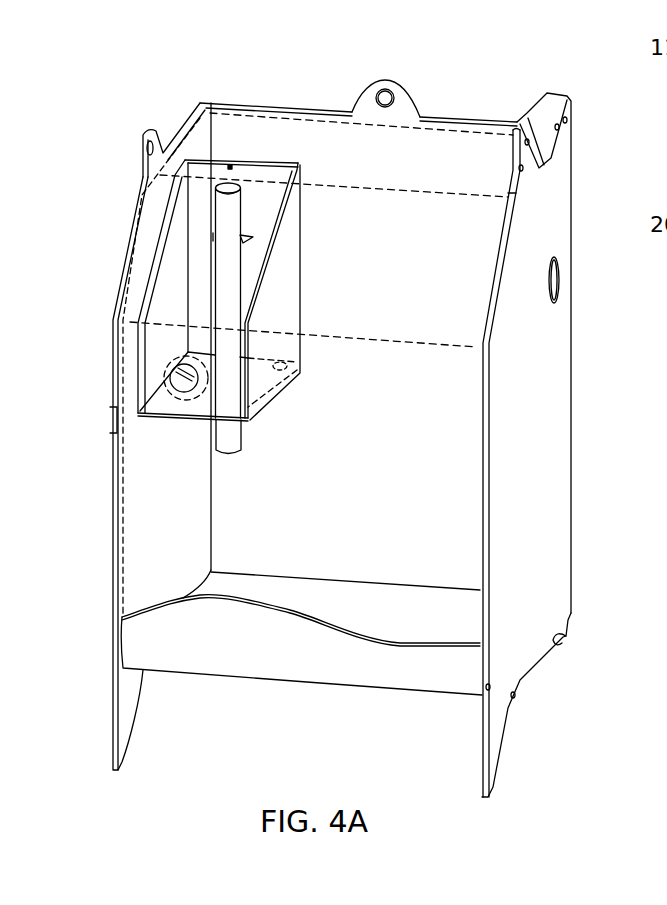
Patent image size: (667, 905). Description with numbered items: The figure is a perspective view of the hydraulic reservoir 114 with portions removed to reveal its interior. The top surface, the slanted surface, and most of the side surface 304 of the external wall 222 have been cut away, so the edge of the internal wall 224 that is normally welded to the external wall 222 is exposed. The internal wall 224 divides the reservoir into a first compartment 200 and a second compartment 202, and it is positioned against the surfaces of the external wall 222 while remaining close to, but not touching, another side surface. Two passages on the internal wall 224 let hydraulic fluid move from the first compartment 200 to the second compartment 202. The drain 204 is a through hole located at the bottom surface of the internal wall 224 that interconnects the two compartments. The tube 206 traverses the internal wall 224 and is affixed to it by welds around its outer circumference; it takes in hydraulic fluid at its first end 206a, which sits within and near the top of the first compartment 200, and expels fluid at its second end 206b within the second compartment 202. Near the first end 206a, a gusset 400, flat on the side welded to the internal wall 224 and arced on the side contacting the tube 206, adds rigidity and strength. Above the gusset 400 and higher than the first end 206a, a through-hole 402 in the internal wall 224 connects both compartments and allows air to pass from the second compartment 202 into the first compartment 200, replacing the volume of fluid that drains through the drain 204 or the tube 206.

The hydraulic reservoir 114 is at (130, 68).
The first compartment 200 is at (200, 283).
The second compartment 202 is at (447, 475).
The drain 204 is at (297, 372).
The tube 206 is at (232, 274).
The first end 206a is at (241, 194).
The second end 206b is at (240, 452).
The external wall 222 is at (523, 357).
The internal wall 224 is at (273, 312).
The side surface 304 is at (277, 630).
The gusset 400 is at (253, 242).
The through-hole 402 is at (232, 166).